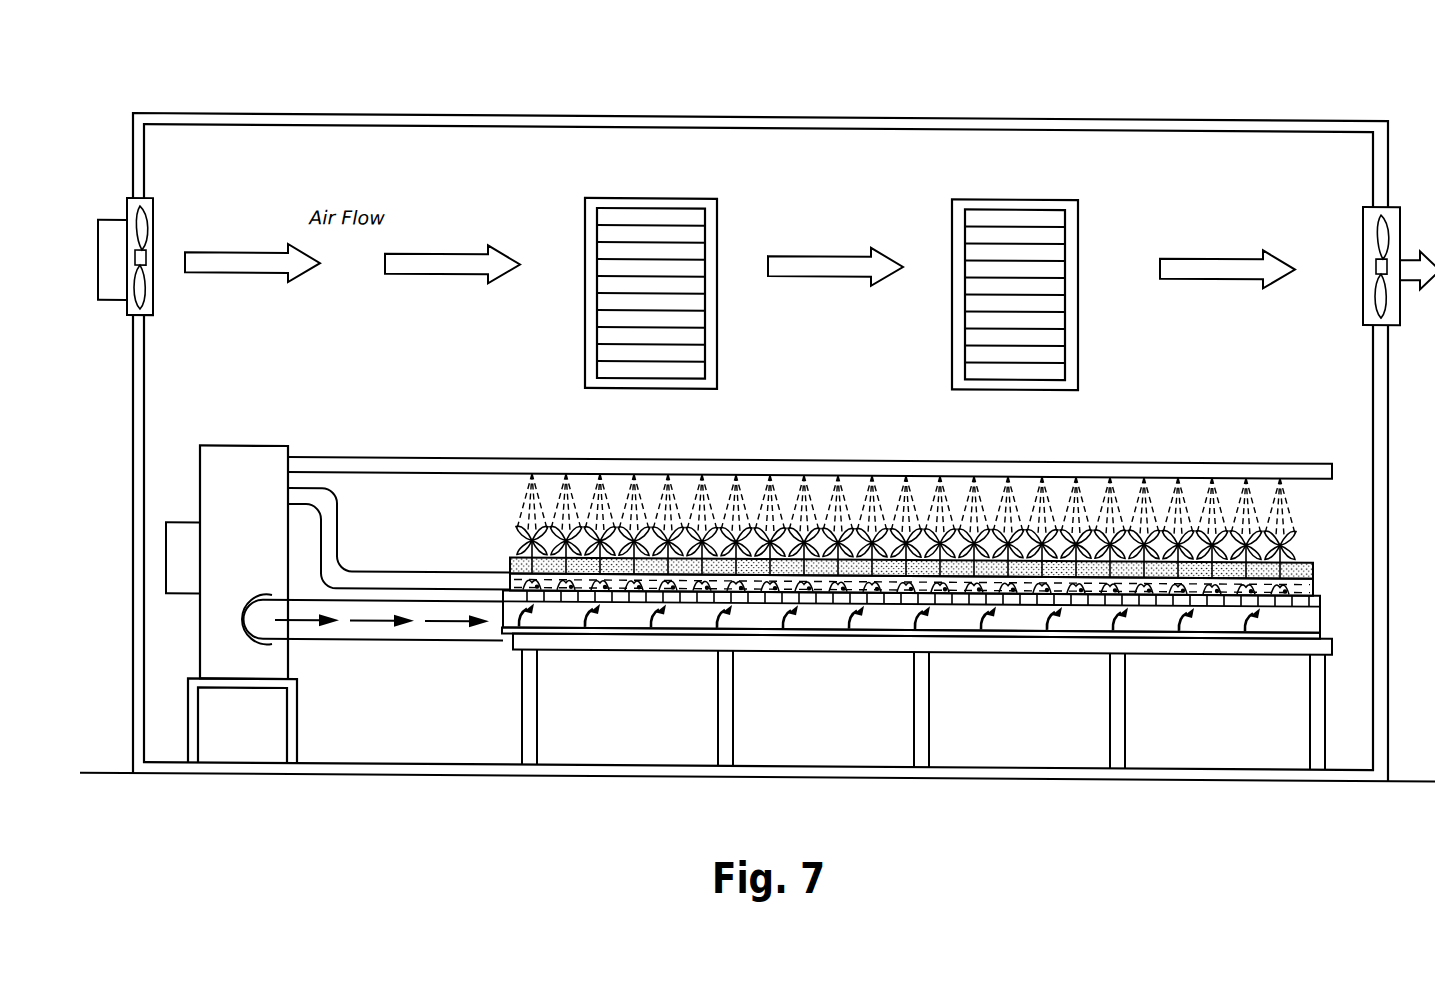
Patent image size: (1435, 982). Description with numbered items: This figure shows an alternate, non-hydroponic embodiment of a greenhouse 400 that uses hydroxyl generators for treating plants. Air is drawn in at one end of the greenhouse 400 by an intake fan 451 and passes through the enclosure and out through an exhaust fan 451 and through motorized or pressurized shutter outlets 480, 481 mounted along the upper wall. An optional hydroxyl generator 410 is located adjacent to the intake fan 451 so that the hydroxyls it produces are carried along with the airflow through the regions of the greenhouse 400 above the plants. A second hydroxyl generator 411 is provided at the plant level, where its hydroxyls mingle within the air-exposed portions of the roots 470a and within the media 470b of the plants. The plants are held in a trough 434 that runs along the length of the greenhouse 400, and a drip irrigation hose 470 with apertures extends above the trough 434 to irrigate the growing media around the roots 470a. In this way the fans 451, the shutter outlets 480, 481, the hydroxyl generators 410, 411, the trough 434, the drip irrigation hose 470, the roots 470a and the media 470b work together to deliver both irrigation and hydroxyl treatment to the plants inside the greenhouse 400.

The greenhouse 400 is at (824, 95).
The hydroxyl generator 410 is at (108, 288).
The hydroxyl generator 411 is at (181, 574).
The trough 434 is at (1192, 626).
The fan 451 is at (156, 212).
The drip irrigation hose 470 is at (911, 643).
The roots 470a is at (625, 562).
The media 470b is at (687, 563).
The shutter outlet 480 is at (988, 214).
The shutter outlet 481 is at (614, 212).